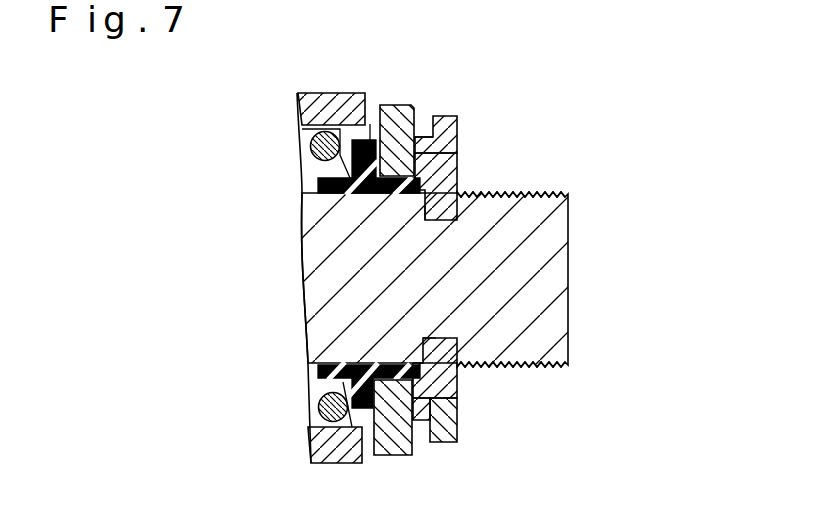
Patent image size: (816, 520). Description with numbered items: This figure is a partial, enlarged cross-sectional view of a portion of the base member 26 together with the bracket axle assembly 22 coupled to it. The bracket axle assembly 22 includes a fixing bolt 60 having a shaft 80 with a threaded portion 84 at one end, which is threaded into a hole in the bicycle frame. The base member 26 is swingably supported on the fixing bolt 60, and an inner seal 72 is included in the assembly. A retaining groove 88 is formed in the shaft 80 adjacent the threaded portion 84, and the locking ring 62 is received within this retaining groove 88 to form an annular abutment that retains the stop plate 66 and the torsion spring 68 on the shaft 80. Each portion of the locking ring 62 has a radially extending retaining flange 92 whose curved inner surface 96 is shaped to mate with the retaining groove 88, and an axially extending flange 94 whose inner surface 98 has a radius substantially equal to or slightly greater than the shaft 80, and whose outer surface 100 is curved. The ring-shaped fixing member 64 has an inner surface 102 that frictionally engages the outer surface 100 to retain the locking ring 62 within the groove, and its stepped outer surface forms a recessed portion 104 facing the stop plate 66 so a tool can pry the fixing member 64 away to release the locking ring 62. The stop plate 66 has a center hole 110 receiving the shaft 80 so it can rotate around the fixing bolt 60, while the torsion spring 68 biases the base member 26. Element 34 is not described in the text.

The bracket axle assembly 22 is at (608, 93).
The base member 26 is at (322, 93).
The O-ring 34 is at (302, 136).
The fixing bolt 60 is at (305, 244).
The locking ring 62 is at (457, 161).
The fixing member 64 is at (457, 129).
The stop plate 66 is at (402, 104).
The torsion spring 68 is at (316, 392).
The inner seal 72 is at (373, 140).
The shaft 80 is at (318, 357).
The threaded portion 84 is at (530, 366).
The retaining groove 88 is at (442, 374).
The retaining flange 92 is at (480, 196).
The flange 94 is at (421, 136).
The curved inner surface 96 is at (436, 338).
The inner surface 98 is at (426, 207).
The outer surface 100 is at (455, 403).
The inner surface 102 is at (452, 433).
The recessed portion 104 is at (422, 422).
The center hole 110 is at (390, 209).